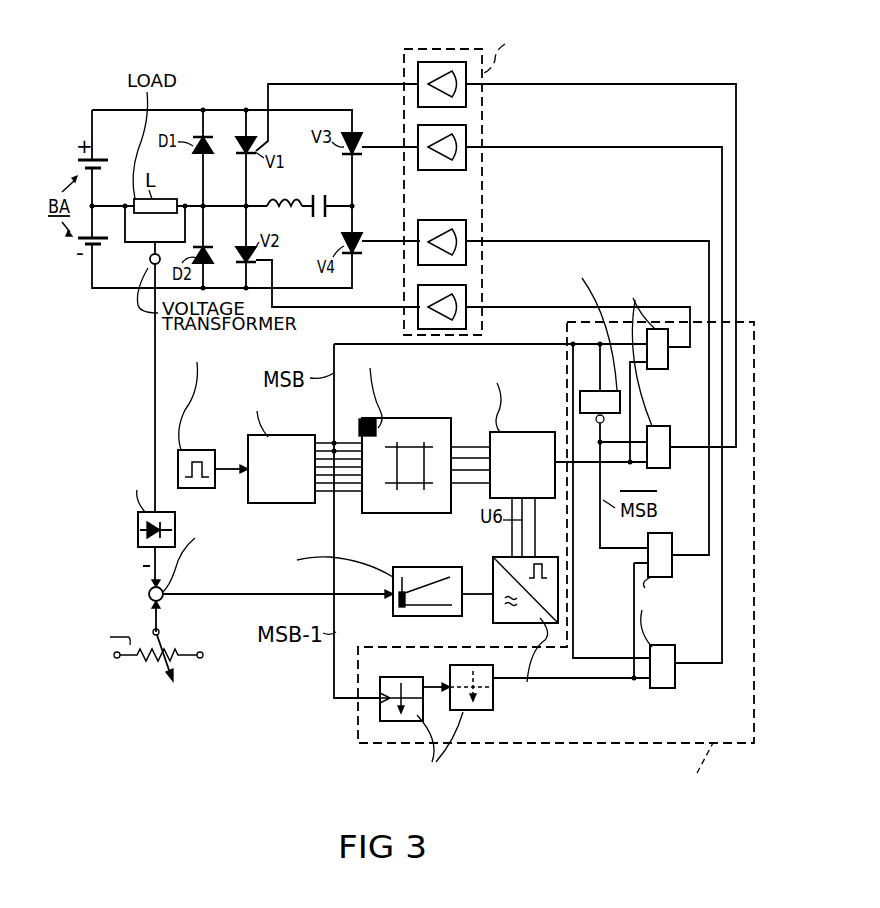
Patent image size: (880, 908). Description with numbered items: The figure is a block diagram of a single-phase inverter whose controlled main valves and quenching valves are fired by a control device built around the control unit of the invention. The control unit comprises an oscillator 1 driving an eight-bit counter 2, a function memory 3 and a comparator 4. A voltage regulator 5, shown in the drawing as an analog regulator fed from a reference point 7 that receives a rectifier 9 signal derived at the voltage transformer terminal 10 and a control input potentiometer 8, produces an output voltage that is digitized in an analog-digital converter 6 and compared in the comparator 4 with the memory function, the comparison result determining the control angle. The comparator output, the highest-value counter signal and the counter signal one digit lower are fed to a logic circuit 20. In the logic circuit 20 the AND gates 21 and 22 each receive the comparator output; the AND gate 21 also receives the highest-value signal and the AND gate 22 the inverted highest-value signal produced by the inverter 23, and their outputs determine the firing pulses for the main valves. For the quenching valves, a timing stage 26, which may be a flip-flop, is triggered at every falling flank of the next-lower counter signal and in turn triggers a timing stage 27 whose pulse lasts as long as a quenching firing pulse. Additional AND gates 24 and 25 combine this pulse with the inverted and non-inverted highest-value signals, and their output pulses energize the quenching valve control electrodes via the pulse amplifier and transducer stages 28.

The oscillator 1 is at (196, 450).
The counter 2 is at (287, 437).
The function memory 3 is at (410, 427).
The comparator 4 is at (525, 440).
The voltage regulator 5 is at (417, 568).
The analog-digital converter 6 is at (493, 568).
The reference point (summing junction) 7 is at (149, 594).
The control input potentiometer 8 is at (148, 664).
The rectifier 9 is at (138, 528).
The voltage transformer terminal 10 is at (147, 265).
The logic circuit 20 is at (557, 743).
The AND gate 21 is at (668, 363).
The AND gate 22 is at (672, 424).
The inverter 23 is at (590, 391).
The AND gate 24 is at (673, 568).
The AND gate 25 is at (667, 645).
The timing stage 26 is at (401, 677).
The timing stage 27 is at (492, 673).
The pulse amplifier and transducer stages 28 is at (475, 192).